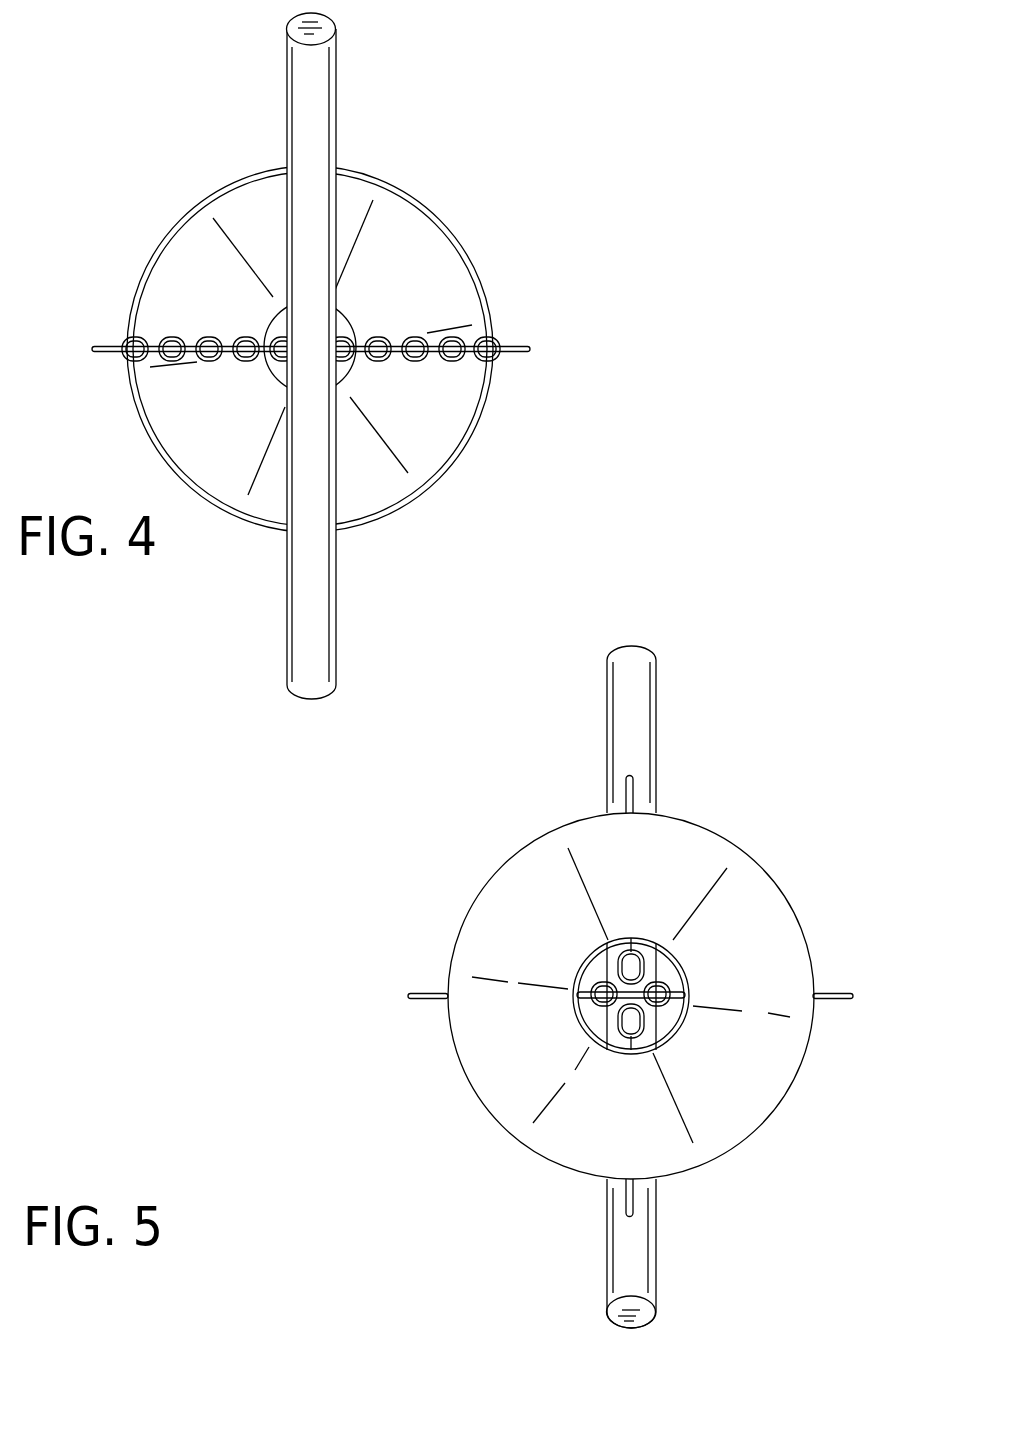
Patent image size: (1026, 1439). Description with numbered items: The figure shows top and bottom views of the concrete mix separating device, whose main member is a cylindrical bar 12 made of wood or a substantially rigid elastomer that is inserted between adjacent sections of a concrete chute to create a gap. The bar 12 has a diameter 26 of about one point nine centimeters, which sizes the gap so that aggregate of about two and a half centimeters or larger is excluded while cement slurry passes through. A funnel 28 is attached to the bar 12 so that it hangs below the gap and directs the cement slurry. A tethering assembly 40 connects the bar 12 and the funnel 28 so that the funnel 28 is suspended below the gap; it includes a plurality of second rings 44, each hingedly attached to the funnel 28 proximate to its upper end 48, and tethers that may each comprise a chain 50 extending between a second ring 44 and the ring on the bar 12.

In FIG. 4, the bar 12 is at (328, 110).
In FIG. 5, the bar 12 is at (648, 728).
In FIG. 4, the diameter 26 is at (332, 36).
In FIG. 4, the funnel 28 is at (403, 266).
In FIG. 5, the funnel 28 is at (787, 943).
In FIG. 5, the tethering assembly 40 is at (656, 984).
In FIG. 4, the second ring 44 is at (545, 343).
In FIG. 5, the second ring 44 is at (407, 981).
In FIG. 4, the upper end 48 is at (494, 428).
In FIG. 4, the chain 50 is at (457, 326).